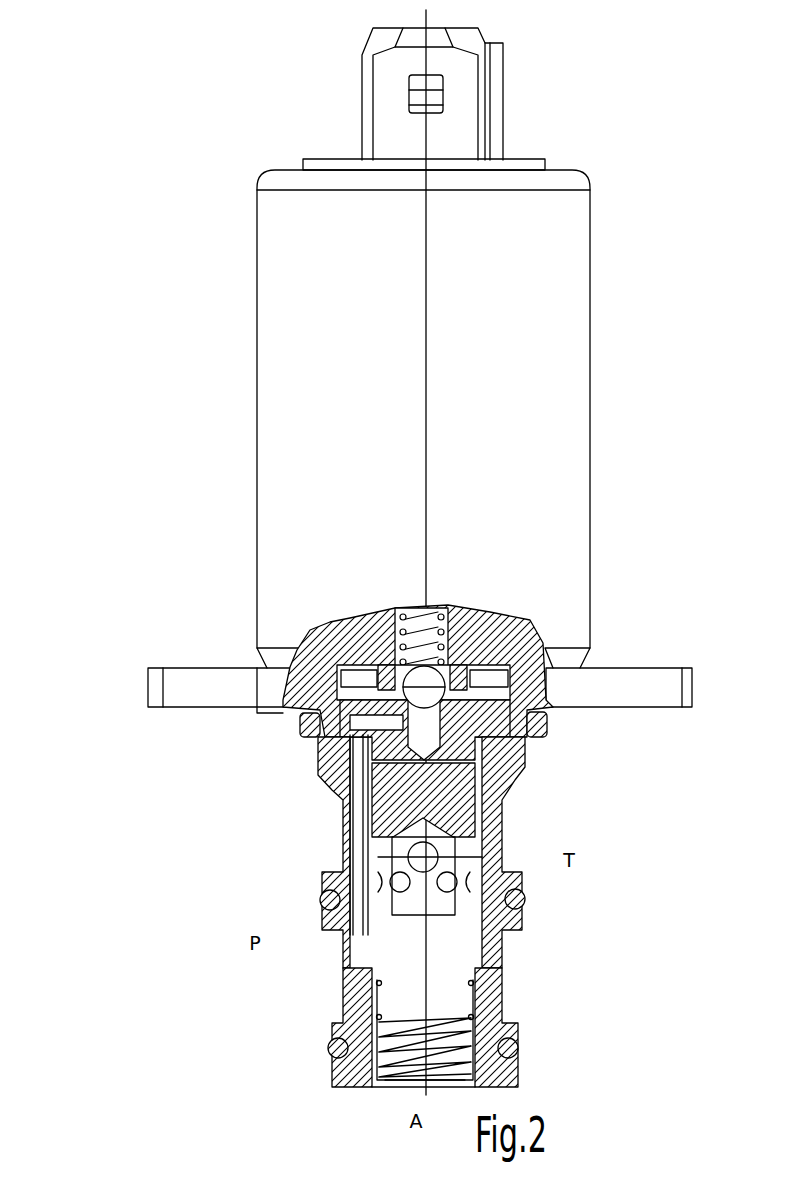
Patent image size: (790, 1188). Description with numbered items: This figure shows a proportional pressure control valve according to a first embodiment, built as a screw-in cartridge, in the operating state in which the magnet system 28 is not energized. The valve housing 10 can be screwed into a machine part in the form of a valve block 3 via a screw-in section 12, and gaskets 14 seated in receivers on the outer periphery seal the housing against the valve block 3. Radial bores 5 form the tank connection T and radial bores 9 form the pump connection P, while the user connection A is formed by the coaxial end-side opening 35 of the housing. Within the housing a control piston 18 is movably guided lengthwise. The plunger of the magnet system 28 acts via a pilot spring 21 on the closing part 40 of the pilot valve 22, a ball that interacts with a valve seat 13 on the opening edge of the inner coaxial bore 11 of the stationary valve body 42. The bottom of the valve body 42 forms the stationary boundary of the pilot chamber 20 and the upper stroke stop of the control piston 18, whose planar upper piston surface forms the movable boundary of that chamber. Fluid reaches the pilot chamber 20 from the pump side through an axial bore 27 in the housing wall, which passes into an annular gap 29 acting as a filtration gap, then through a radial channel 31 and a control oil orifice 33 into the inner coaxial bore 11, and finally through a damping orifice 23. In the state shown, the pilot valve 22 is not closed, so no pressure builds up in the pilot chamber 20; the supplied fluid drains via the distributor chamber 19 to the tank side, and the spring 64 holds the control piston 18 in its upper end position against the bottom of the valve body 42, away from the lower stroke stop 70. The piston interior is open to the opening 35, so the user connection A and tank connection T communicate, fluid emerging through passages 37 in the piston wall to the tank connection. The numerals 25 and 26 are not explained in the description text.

The valve block 3 is at (335, 716).
The radial bores for tank connection 5 is at (500, 848).
The radial bores for pump connection 9 is at (343, 950).
The valve housing 10 is at (523, 923).
The inner coaxial bore 11 is at (527, 740).
The screw-in section 12 is at (318, 753).
The valve seat 13 is at (545, 652).
The gaskets 14 is at (320, 902).
The control piston 18 is at (447, 805).
The distributor chamber 19 is at (325, 672).
The pilot chamber 20 is at (365, 797).
The pilot spring 21 is at (413, 607).
The pilot valve 22 is at (278, 665).
The damping orifice 23 is at (445, 770).
The pin channel 25 is at (350, 838).
The longitudinal axis 26 is at (426, 258).
The axial bore 27 is at (355, 862).
The magnet system 28 is at (540, 362).
The annular gap 29 is at (333, 697).
The radial channel 31 is at (375, 675).
The control oil orifice 33 is at (392, 650).
The end-side opening 35 is at (388, 1088).
The passages 37 is at (398, 893).
The closing part 40 is at (452, 665).
The stationary valve body 42 is at (510, 612).
The spring 64 is at (335, 1025).
The lower stroke stop 70 is at (340, 1065).